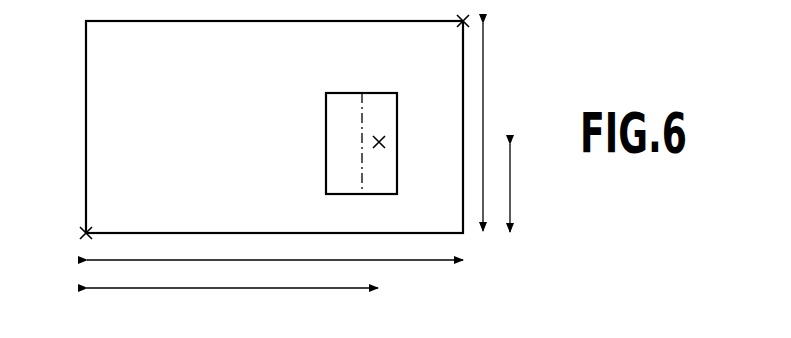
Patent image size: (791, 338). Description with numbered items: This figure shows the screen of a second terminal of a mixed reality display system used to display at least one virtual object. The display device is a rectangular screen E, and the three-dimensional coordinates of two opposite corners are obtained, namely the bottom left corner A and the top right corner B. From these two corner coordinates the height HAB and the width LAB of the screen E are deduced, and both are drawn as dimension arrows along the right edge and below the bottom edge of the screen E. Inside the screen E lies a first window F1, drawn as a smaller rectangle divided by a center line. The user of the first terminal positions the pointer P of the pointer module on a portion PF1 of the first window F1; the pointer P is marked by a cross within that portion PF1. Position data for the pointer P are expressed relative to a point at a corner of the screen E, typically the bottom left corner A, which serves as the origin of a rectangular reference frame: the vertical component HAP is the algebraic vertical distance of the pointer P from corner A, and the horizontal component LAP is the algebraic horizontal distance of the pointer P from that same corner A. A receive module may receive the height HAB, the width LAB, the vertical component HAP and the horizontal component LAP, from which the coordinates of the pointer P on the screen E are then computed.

The rectangular screen E is at (86, 121).
The bottom left corner A is at (75, 237).
The top right corner B is at (475, 13).
The first window F1 is at (326, 113).
The portion of the first window PF1 is at (381, 108).
The pointer P is at (386, 142).
The height of the screen HAB is at (509, 127).
The vertical component HAP is at (537, 188).
The width of the screen LAB is at (275, 248).
The horizontal component LAP is at (232, 275).